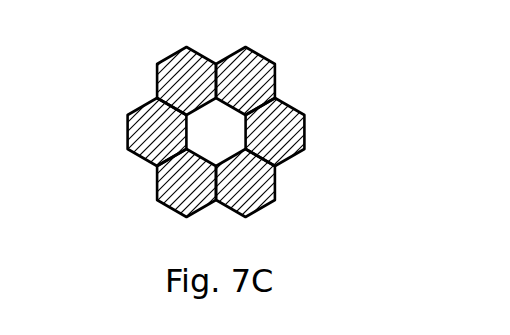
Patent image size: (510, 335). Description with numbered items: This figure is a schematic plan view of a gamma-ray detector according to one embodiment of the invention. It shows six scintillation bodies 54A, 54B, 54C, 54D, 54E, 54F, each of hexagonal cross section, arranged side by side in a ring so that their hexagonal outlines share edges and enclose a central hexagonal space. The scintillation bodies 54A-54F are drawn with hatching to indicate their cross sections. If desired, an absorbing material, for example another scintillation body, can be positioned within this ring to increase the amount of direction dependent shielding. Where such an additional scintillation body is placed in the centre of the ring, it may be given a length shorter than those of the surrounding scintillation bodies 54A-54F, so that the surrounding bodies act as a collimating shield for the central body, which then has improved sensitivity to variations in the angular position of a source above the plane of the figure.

The scintillation body 54A is at (176, 84).
The scintillation body 54B is at (258, 83).
The scintillation body 54C is at (284, 131).
The scintillation body 54D is at (260, 183).
The scintillation body 54E is at (180, 182).
The scintillation body 54F is at (150, 130).